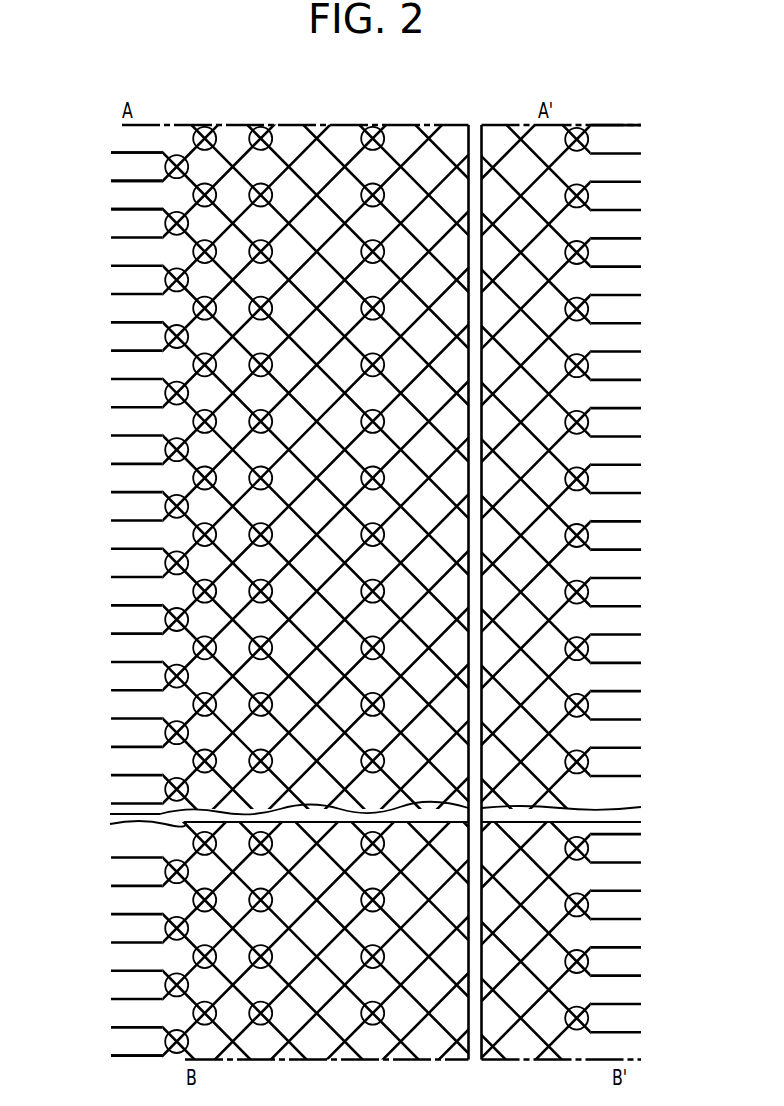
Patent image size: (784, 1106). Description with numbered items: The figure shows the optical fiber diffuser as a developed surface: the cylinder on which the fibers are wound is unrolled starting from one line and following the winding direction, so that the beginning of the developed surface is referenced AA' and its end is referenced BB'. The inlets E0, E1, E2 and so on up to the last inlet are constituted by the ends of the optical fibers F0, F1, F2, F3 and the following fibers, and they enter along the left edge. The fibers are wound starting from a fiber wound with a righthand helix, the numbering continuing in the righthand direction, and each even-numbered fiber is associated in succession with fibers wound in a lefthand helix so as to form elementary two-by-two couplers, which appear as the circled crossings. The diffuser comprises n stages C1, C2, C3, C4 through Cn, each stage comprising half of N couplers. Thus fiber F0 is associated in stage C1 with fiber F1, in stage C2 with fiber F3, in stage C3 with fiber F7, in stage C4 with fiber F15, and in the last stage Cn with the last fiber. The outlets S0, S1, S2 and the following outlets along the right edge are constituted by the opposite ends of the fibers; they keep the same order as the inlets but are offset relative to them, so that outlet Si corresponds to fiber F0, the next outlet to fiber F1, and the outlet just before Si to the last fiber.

The first stage C1 is at (177, 108).
The second stage C2 is at (205, 108).
The third stage C3 is at (261, 108).
The fourth stage C4 is at (373, 108).
The n-th stage Cn is at (577, 108).
The inlet E0 is at (72, 152).
The inlet E1 is at (72, 181).
The inlet E2 is at (72, 209).
The optical fiber F0 is at (123, 152).
The optical fiber F1 is at (123, 181).
The optical fiber F2 is at (123, 209).
The optical fiber F3 is at (123, 238).
The optical fiber F7 is at (123, 350).
The optical fiber F15 is at (123, 577).
The outlet S0 is at (628, 124).
The outlet S1 is at (629, 153).
The outlet S2 is at (629, 182).
The outlet Si is at (630, 606).